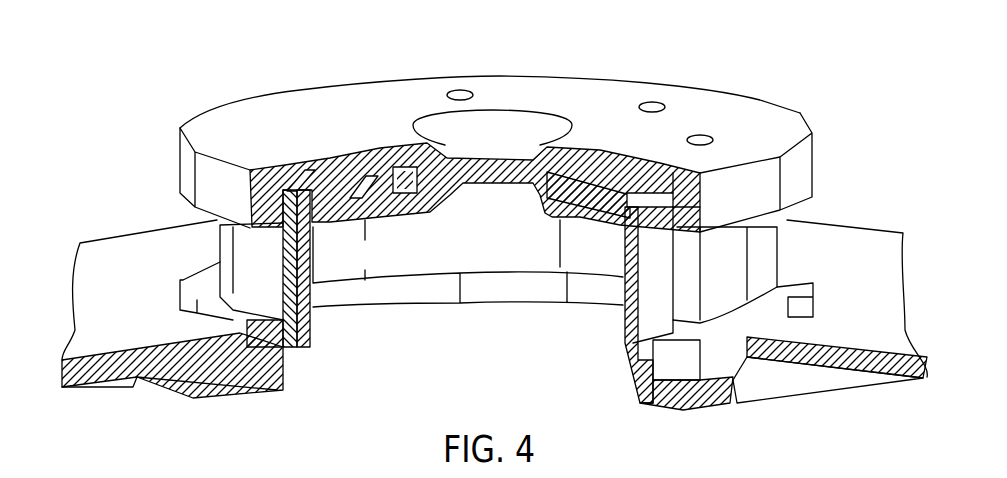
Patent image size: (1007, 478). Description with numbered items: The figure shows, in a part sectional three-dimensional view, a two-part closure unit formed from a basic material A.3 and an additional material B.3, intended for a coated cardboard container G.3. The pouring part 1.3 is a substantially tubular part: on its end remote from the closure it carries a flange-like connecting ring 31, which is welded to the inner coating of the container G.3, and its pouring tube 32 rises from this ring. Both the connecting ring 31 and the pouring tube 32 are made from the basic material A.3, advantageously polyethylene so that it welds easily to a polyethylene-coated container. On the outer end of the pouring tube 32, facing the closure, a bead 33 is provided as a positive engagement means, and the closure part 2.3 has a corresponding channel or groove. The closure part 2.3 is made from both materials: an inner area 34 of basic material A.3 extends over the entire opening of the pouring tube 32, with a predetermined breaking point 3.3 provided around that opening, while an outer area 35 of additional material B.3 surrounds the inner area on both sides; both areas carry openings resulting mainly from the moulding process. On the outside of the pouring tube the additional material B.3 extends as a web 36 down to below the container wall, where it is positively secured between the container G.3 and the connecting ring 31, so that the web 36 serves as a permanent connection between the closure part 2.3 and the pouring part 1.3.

The closure part 2.3 is at (253, 90).
The predetermined breaking point 3.3 is at (307, 180).
The outer area 35 is at (380, 160).
The basic material A.3 is at (577, 173).
The inner area 34 is at (613, 180).
The additional material B.3 is at (650, 170).
The pouring part 1.3 is at (207, 240).
The web 36 is at (313, 257).
The bead 33 is at (655, 213).
The pouring tube 32 is at (655, 315).
The container G.3 is at (862, 263).
The connecting ring 31 is at (753, 397).